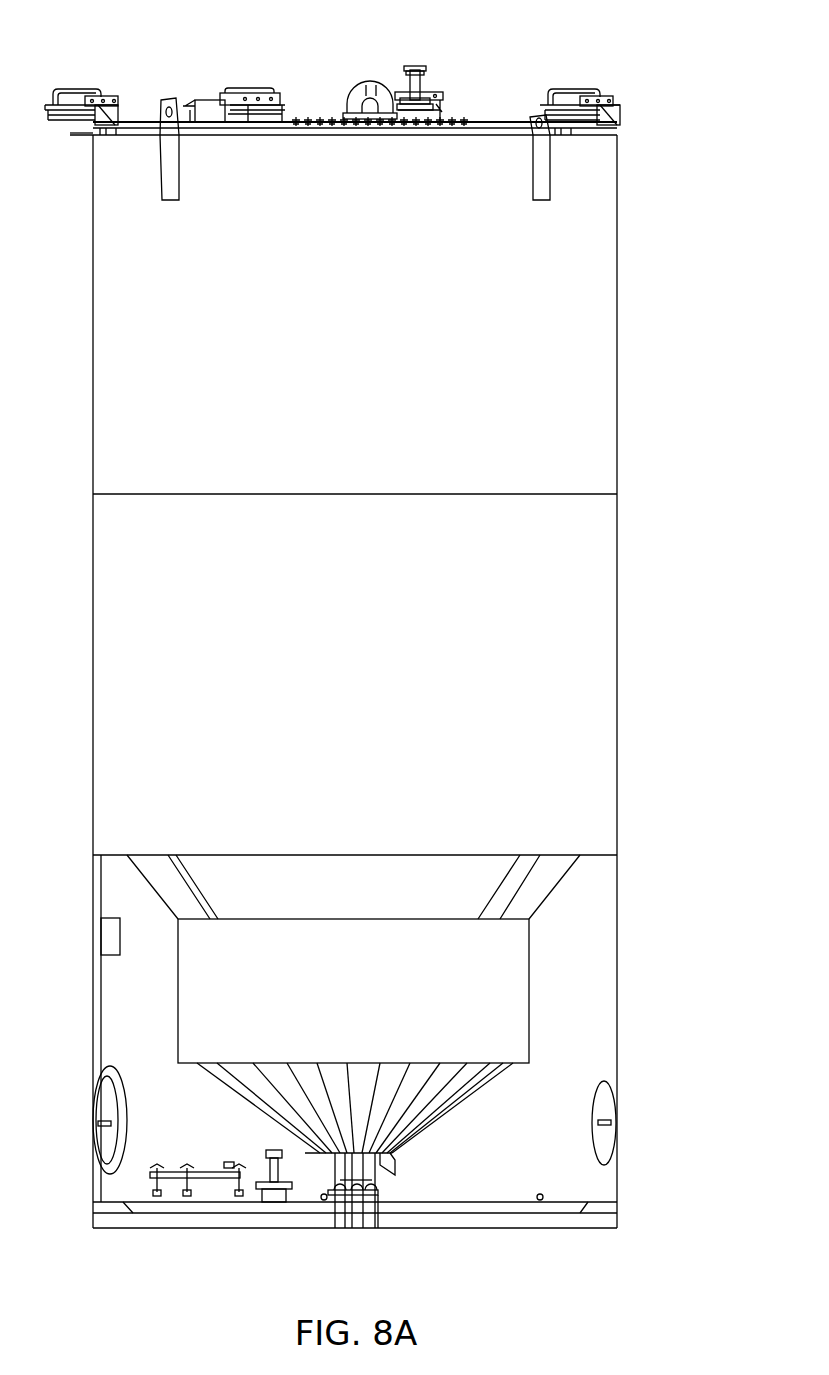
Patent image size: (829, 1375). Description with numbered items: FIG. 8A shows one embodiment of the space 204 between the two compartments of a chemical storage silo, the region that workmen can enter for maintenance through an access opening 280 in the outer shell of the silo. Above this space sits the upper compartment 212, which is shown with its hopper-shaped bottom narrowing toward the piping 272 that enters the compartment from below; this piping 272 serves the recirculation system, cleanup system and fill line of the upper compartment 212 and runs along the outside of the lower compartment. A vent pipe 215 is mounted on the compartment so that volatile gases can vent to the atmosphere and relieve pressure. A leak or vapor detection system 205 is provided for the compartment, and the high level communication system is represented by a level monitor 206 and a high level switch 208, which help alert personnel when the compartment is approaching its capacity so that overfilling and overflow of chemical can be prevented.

The space 204 is at (603, 908).
The upper compartment 212 is at (148, 876).
The leak or vapor detection system 205 is at (112, 937).
The access opening 280 is at (612, 1131).
The vent pipe 215 is at (362, 85).
The piping 272 is at (340, 1213).
The level monitor 206 is at (283, 1157).
The high level switch 208 is at (230, 1167).